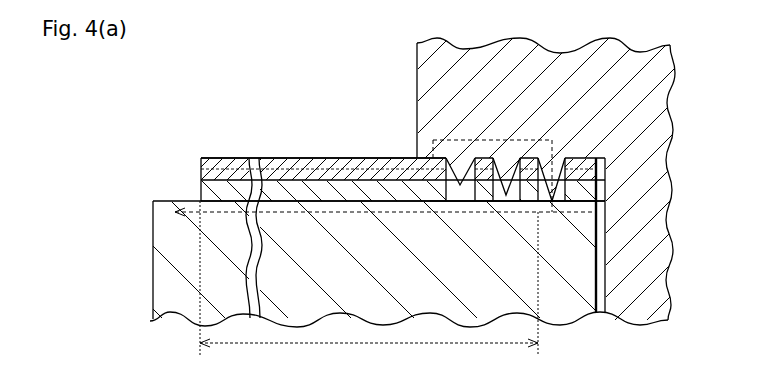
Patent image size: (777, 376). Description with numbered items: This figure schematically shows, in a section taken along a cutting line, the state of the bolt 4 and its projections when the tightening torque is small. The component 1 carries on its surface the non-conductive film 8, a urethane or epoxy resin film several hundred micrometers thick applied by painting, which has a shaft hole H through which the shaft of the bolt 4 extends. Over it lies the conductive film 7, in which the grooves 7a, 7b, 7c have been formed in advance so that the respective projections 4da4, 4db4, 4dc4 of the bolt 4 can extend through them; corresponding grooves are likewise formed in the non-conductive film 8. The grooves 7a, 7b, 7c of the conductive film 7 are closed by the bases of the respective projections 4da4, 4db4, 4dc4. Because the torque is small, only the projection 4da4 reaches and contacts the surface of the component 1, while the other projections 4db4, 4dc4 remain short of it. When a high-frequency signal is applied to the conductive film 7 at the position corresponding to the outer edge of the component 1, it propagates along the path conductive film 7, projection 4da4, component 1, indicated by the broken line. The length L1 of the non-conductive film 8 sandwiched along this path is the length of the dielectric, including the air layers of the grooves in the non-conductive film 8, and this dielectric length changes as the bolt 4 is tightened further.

The component 1 is at (163, 267).
The bolt 4 is at (523, 167).
The projection 4da4 is at (552, 195).
The projection 4db4 is at (503, 188).
The projection 4dc4 is at (460, 183).
The conductive film 7 is at (428, 180).
The groove 7a is at (590, 180).
The groove 7b is at (547, 218).
The groove 7c is at (414, 157).
The non-conductive film 8 is at (200, 196).
The shaft hole H is at (600, 288).
The length of the non-conductive film L1 is at (369, 355).